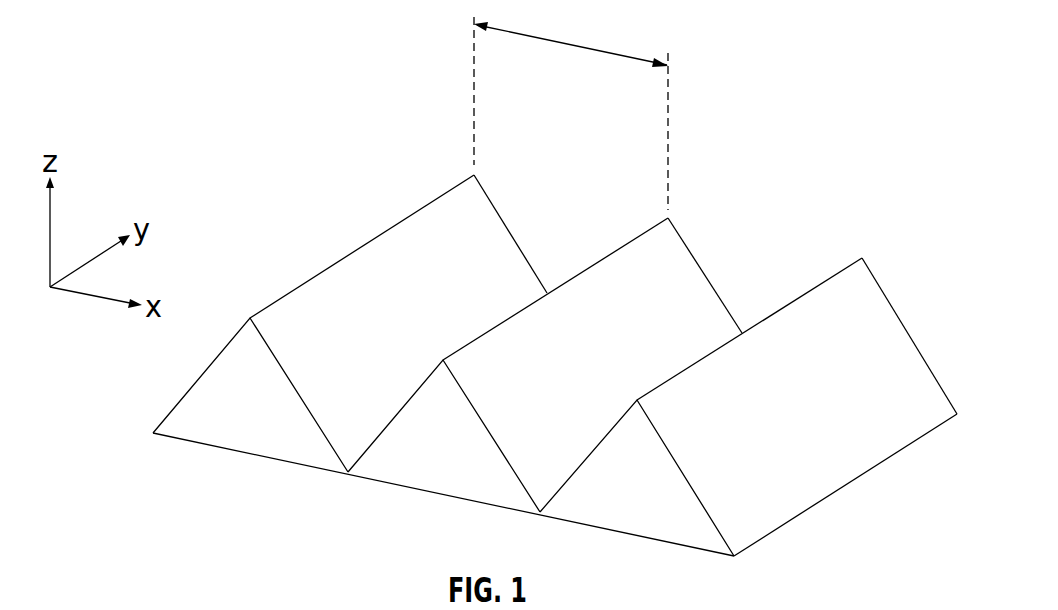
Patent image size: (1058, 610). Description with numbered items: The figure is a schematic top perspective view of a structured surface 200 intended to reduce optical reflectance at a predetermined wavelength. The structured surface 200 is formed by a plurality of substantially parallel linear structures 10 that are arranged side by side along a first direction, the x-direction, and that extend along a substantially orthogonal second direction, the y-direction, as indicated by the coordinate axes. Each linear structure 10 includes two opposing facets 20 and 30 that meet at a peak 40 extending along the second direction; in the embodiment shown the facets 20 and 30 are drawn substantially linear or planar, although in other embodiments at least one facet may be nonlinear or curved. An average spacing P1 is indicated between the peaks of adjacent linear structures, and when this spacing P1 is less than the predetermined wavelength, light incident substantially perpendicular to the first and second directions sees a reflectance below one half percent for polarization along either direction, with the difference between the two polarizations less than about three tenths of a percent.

The linear structure 10 is at (863, 250).
The facet 20 is at (611, 431).
The facet 30 is at (897, 348).
The peak 40 is at (796, 298).
The structured surface 200 is at (228, 134).
The average spacing P1 is at (571, 109).